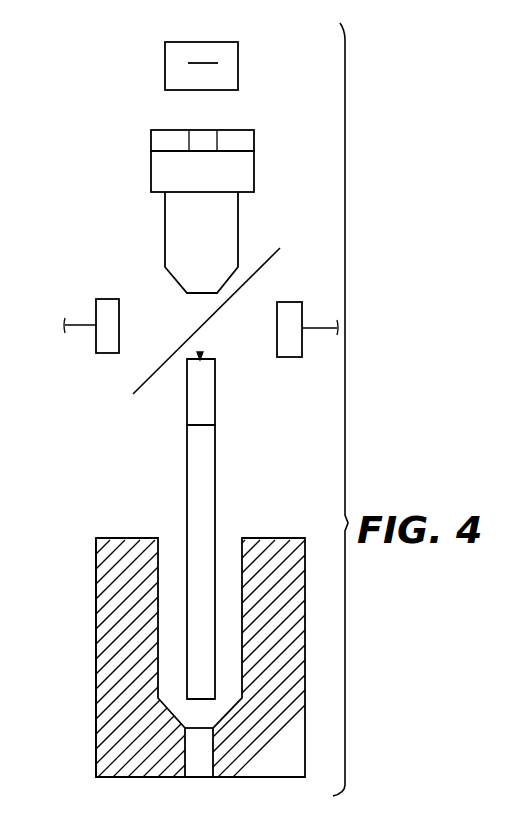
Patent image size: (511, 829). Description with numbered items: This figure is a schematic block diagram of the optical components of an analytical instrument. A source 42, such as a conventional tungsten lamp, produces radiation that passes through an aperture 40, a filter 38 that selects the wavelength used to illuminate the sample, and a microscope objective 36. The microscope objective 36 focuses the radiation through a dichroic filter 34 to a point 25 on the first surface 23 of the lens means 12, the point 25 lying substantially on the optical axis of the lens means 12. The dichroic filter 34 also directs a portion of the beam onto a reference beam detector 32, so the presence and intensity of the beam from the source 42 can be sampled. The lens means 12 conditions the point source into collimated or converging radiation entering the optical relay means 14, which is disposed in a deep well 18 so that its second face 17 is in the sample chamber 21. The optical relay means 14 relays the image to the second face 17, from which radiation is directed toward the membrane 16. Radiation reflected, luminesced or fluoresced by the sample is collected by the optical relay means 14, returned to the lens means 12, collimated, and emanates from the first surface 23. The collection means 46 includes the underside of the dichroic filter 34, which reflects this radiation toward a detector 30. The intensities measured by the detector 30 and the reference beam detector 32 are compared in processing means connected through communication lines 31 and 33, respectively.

The source 42 is at (238, 65).
The aperture 40 is at (251, 145).
The filter 38 is at (249, 183).
The microscope objective 36 is at (237, 232).
The dichroic filter 34 is at (241, 299).
The collection means 46 is at (176, 357).
The reference beam detector 32 is at (109, 301).
The communication line 33 is at (82, 323).
The detector 30 is at (297, 343).
The communication line 31 is at (318, 325).
The lens means 12 is at (207, 402).
The optical relay means 14 is at (207, 460).
The point 25 is at (200, 354).
The first surface 23 is at (207, 356).
The sample chamber 21 is at (230, 574).
The second face 17 is at (202, 699).
The membrane 16 is at (203, 727).
The deep well 18 is at (168, 667).